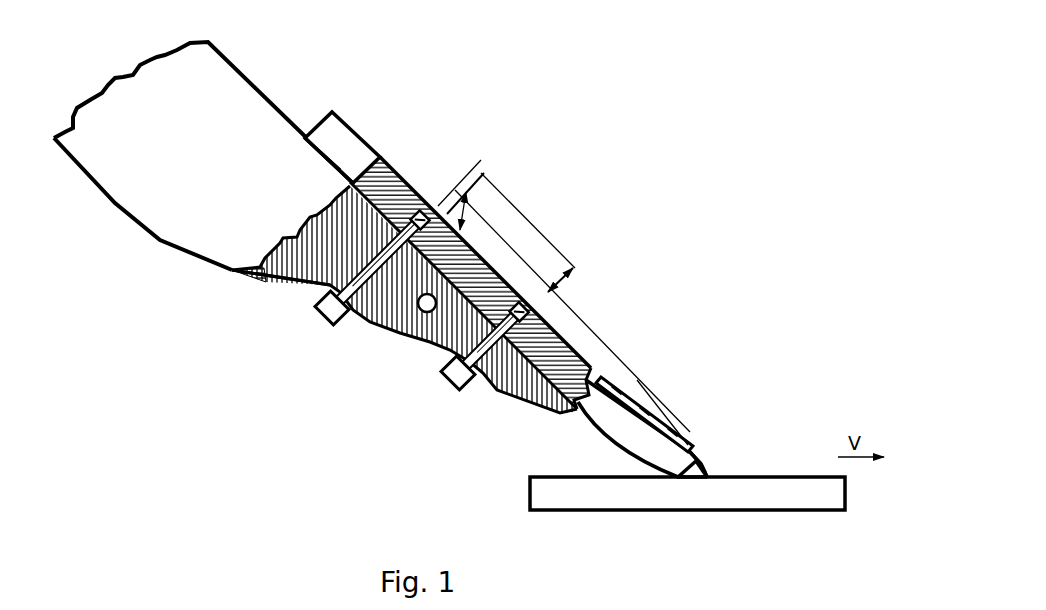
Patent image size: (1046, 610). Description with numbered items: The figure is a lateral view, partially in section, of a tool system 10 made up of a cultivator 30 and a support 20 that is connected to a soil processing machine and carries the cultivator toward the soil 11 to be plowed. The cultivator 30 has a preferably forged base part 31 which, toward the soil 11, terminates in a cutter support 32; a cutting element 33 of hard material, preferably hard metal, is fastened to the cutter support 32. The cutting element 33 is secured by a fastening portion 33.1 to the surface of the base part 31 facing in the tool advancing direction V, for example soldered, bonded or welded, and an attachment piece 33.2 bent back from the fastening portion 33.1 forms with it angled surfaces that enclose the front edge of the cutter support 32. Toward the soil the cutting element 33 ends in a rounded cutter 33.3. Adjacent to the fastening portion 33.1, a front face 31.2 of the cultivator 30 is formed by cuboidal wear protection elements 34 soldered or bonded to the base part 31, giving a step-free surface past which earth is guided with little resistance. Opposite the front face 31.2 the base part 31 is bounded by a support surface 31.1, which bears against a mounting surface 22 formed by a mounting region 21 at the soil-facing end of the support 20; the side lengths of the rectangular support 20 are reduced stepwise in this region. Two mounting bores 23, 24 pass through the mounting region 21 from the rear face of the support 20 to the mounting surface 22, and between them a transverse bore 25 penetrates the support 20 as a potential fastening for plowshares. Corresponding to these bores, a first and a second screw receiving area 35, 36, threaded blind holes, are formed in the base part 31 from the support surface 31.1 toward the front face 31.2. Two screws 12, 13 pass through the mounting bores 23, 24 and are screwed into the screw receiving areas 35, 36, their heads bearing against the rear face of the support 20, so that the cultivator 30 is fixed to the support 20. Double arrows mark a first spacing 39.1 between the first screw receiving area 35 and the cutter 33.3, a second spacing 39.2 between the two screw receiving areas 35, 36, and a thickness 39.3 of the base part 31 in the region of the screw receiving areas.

The tool system 10 is at (656, 96).
The soil 11 is at (528, 480).
The screw 12 is at (337, 308).
The screw 13 is at (460, 380).
The support 20 is at (195, 87).
The mounting region 21 is at (267, 278).
The mounting surface 22 is at (334, 157).
The mounting bore 23 is at (280, 282).
The mounting bore 24 is at (447, 348).
The transverse bore 25 is at (417, 312).
The cultivator 30 is at (732, 176).
The base part 31 is at (380, 178).
The support surface 31.1 is at (318, 150).
The front face 31.2 is at (340, 117).
The cutter support 32 is at (688, 451).
The cutting element 33 is at (710, 465).
The fastening portion 33.1 is at (715, 458).
The attachment piece 33.2 is at (712, 472).
The cutter 33.3 is at (714, 478).
The wear protection elements 34 is at (600, 384).
The first screw receiving area 35 is at (530, 300).
The second screw receiving area 36 is at (423, 262).
The first spacing 39.1 is at (590, 330).
The second spacing 39.2 is at (510, 240).
The thickness 39.3 is at (462, 227).